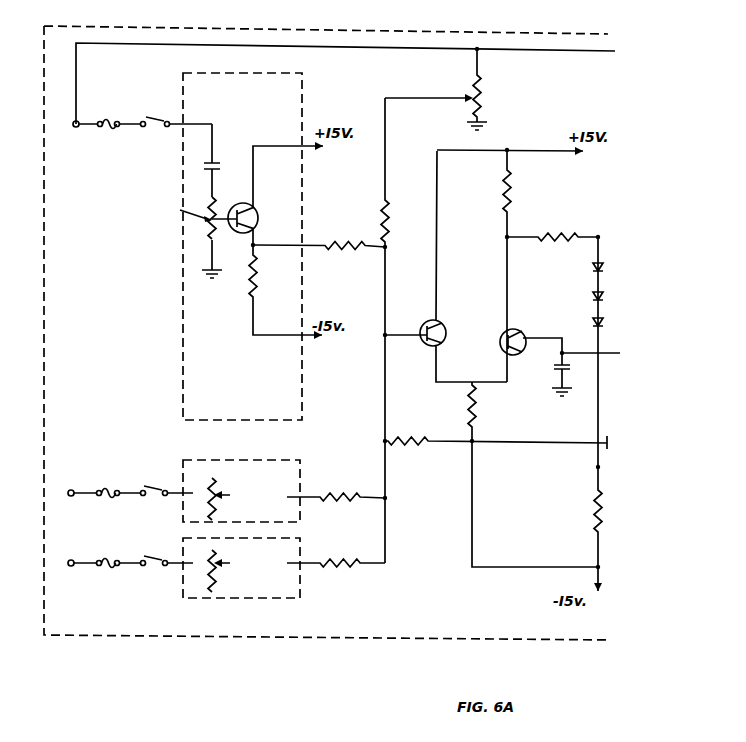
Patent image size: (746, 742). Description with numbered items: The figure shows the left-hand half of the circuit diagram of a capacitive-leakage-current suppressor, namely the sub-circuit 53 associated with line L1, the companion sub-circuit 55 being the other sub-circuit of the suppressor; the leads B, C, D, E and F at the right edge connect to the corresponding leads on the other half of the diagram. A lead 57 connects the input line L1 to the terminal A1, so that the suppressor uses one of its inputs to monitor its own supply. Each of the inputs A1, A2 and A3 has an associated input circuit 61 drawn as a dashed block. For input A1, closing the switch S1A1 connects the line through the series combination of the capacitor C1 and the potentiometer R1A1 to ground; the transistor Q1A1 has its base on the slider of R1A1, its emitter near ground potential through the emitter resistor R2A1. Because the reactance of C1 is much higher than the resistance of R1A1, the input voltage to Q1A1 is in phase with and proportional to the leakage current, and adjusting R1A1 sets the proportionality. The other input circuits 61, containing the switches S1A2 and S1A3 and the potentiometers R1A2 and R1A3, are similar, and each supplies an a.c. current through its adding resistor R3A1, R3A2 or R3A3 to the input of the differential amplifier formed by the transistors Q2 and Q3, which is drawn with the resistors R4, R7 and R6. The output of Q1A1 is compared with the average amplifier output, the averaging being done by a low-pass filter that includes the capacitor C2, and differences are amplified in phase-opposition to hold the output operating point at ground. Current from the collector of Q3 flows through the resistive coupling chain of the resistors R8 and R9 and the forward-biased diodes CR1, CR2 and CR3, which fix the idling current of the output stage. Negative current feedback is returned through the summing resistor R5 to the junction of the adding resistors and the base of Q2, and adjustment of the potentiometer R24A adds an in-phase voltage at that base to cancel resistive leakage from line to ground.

The sub-circuit 53 is at (253, 638).
The lead 57 is at (390, 48).
The input circuit 61 is at (303, 102).
The sub-circuit 55 is at (284, 736).
The terminal A1 is at (75, 121).
The switch S1A1 is at (165, 118).
The capacitor C1 is at (218, 160).
The potentiometer R1A1 is at (181, 210).
The transistor Q1A1 is at (252, 208).
The emitter resistor R2A1 is at (257, 283).
The adding resistor R3A1 is at (323, 243).
The resistor R4 is at (390, 221).
The potentiometer R24A is at (485, 97).
The lead B is at (590, 51).
The resistor R7 is at (503, 195).
The resistor R8 is at (548, 228).
The lead C is at (598, 236).
The diode CR1 is at (592, 266).
The diode CR2 is at (592, 294).
The diode CR3 is at (594, 318).
The transistor Q2 is at (443, 325).
The transistor Q3 is at (522, 332).
The lead D is at (604, 347).
The capacitor C2 is at (552, 370).
The summing resistor R5 is at (423, 438).
The resistor R6 is at (478, 415).
The lead E is at (612, 426).
The lead F is at (600, 466).
The resistor R9 is at (592, 516).
The terminal A2 is at (71, 490).
The switch S1A2 is at (162, 488).
The potentiometer R1A2 is at (219, 490).
The adding resistor R3A2 is at (330, 490).
The terminal A3 is at (69, 560).
The switch S1A3 is at (162, 557).
The potentiometer R1A3 is at (219, 560).
The adding resistor R3A3 is at (331, 557).